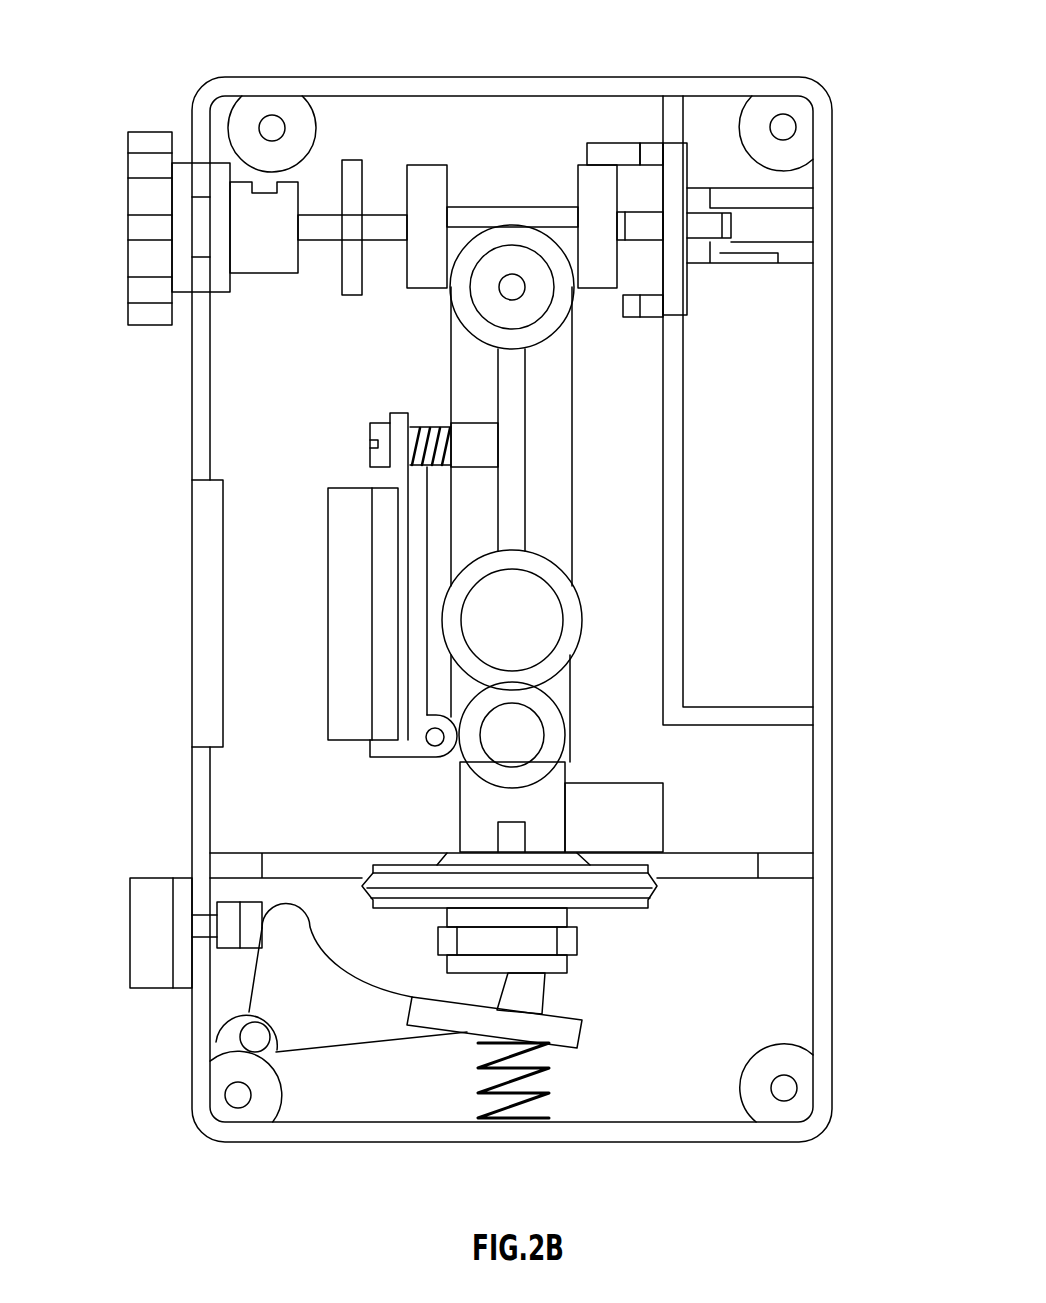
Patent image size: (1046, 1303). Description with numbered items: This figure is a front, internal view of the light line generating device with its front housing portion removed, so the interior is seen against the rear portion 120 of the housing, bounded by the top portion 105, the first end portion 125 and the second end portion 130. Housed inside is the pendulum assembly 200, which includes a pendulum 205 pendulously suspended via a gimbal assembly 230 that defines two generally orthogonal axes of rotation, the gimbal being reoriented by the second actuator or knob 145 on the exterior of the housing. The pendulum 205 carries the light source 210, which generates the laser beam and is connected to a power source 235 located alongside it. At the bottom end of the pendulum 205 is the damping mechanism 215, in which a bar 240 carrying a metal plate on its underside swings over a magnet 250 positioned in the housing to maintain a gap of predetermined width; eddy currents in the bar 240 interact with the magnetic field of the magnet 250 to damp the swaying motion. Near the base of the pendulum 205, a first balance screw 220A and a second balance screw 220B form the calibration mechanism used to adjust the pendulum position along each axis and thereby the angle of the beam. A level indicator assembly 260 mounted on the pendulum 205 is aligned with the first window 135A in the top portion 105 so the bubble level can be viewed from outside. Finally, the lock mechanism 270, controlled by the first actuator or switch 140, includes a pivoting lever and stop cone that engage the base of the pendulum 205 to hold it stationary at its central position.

The top portion 105 is at (190, 378).
The rear portion 120 is at (412, 110).
The first end portion 125 is at (643, 1142).
The second end portion 130 is at (563, 77).
The first window 135A is at (190, 612).
The first actuator 140 is at (130, 952).
The second actuator 145 is at (128, 227).
The pendulum assembly 200 is at (585, 569).
The pendulum 205 is at (543, 417).
The light source 210 is at (495, 630).
The damping mechanism 215 is at (650, 917).
The first balance screw 220A is at (512, 735).
The second balance screw 220B is at (663, 815).
The gimbal assembly 230 is at (604, 158).
The power source 235 is at (730, 490).
The bar 240 is at (650, 882).
The magnet 250 is at (570, 938).
The level indicator assembly 260 is at (327, 715).
The lock mechanism 270 is at (357, 1055).